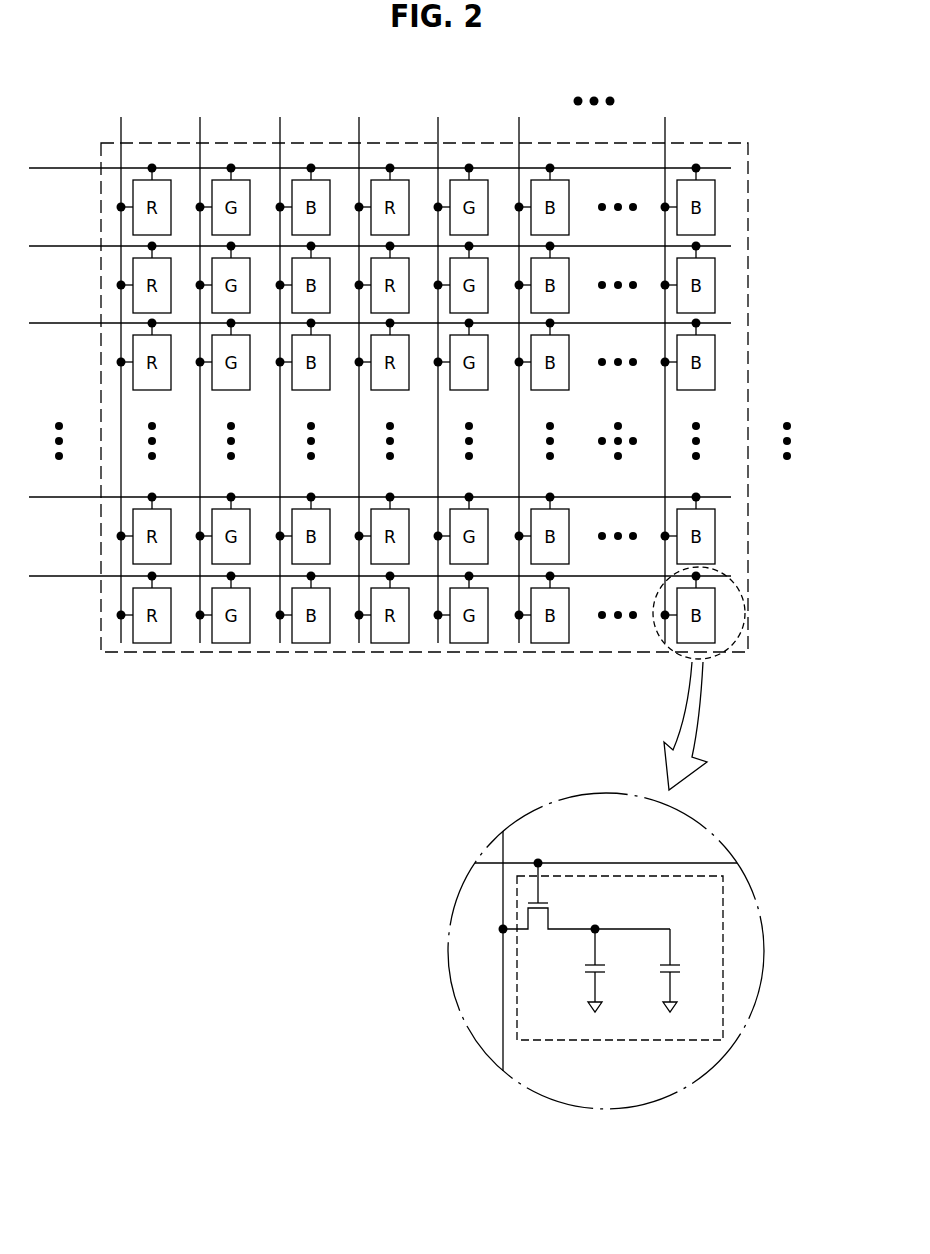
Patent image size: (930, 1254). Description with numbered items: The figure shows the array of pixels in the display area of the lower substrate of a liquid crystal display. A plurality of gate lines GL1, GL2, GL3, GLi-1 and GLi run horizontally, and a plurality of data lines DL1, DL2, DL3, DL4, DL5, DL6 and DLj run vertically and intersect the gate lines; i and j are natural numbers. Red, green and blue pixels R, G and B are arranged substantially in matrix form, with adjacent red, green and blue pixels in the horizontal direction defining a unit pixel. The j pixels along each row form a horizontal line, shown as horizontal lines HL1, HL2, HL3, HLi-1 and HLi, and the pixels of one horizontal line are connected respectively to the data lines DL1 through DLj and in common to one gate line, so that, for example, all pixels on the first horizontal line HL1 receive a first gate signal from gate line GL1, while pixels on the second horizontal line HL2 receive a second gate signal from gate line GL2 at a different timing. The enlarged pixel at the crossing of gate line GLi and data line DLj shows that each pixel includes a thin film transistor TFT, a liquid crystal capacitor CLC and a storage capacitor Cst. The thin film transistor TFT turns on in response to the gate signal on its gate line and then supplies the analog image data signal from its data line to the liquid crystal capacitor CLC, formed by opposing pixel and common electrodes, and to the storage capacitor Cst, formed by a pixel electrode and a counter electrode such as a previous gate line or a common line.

The first data line DL1 is at (123, 367).
The second data line DL2 is at (203, 367).
The third data line DL3 is at (283, 367).
The fourth data line DL4 is at (362, 367).
The fifth data line DL5 is at (441, 367).
The sixth data line DL6 is at (522, 367).
The j-th data line DLj is at (415, 904).
The first gate line GL1 is at (380, 159).
The second gate line GL2 is at (380, 237).
The third gate line GL3 is at (380, 314).
The (i-1)th gate line GLi-1 is at (380, 486).
The i-th gate line GLi is at (568, 862).
The first horizontal line HL1 is at (466, 203).
The second horizontal line HL2 is at (466, 281).
The third horizontal line HL3 is at (466, 358).
The (i-1)th horizontal line HLi-1 is at (477, 532).
The i-th horizontal line HLi is at (467, 611).
The thin film transistor TFT is at (586, 907).
The liquid crystal capacitor CLC is at (610, 970).
The storage capacitor Cst is at (684, 970).